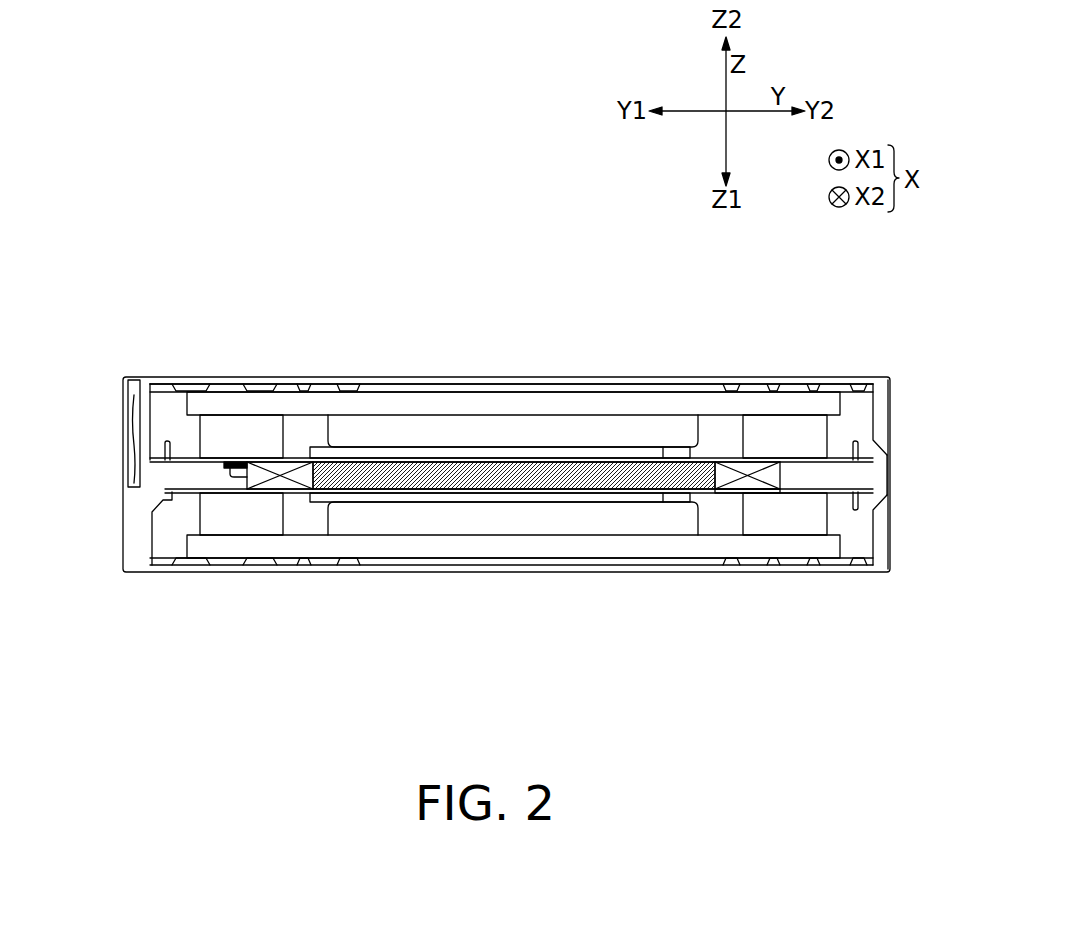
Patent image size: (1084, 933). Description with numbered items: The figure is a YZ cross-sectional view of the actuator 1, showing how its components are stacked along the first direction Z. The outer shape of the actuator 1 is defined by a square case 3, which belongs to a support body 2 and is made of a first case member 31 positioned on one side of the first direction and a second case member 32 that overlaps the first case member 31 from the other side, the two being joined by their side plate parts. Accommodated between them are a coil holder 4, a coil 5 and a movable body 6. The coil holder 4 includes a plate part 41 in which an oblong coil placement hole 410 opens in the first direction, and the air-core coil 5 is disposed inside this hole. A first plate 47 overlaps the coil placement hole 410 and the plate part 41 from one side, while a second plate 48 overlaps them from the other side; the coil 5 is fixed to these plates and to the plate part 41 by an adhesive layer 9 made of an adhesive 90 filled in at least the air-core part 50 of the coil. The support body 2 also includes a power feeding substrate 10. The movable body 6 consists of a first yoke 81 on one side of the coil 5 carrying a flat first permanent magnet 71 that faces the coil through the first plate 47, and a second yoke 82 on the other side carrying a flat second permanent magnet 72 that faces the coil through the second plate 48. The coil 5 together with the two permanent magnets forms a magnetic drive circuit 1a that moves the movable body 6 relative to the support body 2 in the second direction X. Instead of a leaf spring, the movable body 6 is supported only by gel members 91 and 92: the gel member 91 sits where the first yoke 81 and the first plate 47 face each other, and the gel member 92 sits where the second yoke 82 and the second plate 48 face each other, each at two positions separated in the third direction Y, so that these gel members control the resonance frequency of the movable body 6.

The actuator 1 is at (180, 299).
The magnetic drive circuit 1a is at (361, 407).
The power feeding substrate 10 is at (136, 393).
The support body 2 is at (438, 283).
The case 3 is at (497, 315).
The first case member 31 is at (457, 459).
The second case member 32 is at (402, 378).
The coil holder 4 is at (126, 507).
The plate part 41 is at (175, 478).
The coil placement hole 410 is at (783, 477).
The first plate 47 is at (557, 490).
The second plate 48 is at (496, 457).
The coil 5 is at (722, 460).
The air-core part 50 is at (723, 495).
The movable body 6 is at (511, 541).
The first permanent magnet 71 is at (662, 655).
The second permanent magnet 72 is at (654, 435).
The first yoke 81 is at (488, 547).
The second yoke 82 is at (610, 405).
The adhesive layer 9 is at (243, 473).
The adhesive 90 is at (213, 463).
The gel member 91 is at (262, 512).
The gel member 92 is at (232, 427).